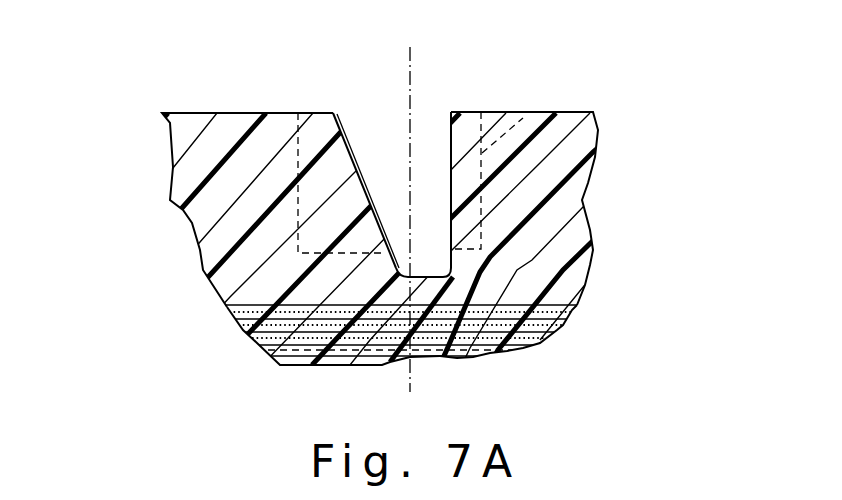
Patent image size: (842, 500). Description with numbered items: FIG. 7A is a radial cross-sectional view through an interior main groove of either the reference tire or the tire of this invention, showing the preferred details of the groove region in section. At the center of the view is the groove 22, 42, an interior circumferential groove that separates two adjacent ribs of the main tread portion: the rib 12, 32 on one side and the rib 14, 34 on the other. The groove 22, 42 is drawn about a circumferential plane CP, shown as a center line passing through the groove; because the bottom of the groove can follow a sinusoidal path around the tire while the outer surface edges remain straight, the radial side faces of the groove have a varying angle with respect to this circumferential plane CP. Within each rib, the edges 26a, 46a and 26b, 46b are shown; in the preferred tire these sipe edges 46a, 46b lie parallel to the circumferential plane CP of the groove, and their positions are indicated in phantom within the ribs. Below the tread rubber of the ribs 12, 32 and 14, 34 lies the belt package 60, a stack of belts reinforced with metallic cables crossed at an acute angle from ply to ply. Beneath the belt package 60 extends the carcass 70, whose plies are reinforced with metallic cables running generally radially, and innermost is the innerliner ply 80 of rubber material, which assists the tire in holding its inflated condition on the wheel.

The first interior rib 12 is at (184, 182).
The main rib 32 is at (197, 113).
The rib 14 is at (598, 184).
The main rib 34 is at (575, 112).
The groove 22 is at (443, 160).
The interior circumferential groove 42 is at (383, 150).
The rib edge 26a is at (299, 158).
The sipe edge 46a is at (298, 167).
The rib edge 26b is at (554, 158).
The sipe edge 46b is at (528, 112).
The belt package 60 is at (560, 330).
The carcass 70 is at (255, 352).
The innerliner ply 80 is at (383, 358).
The circumferential plane CP is at (410, 58).